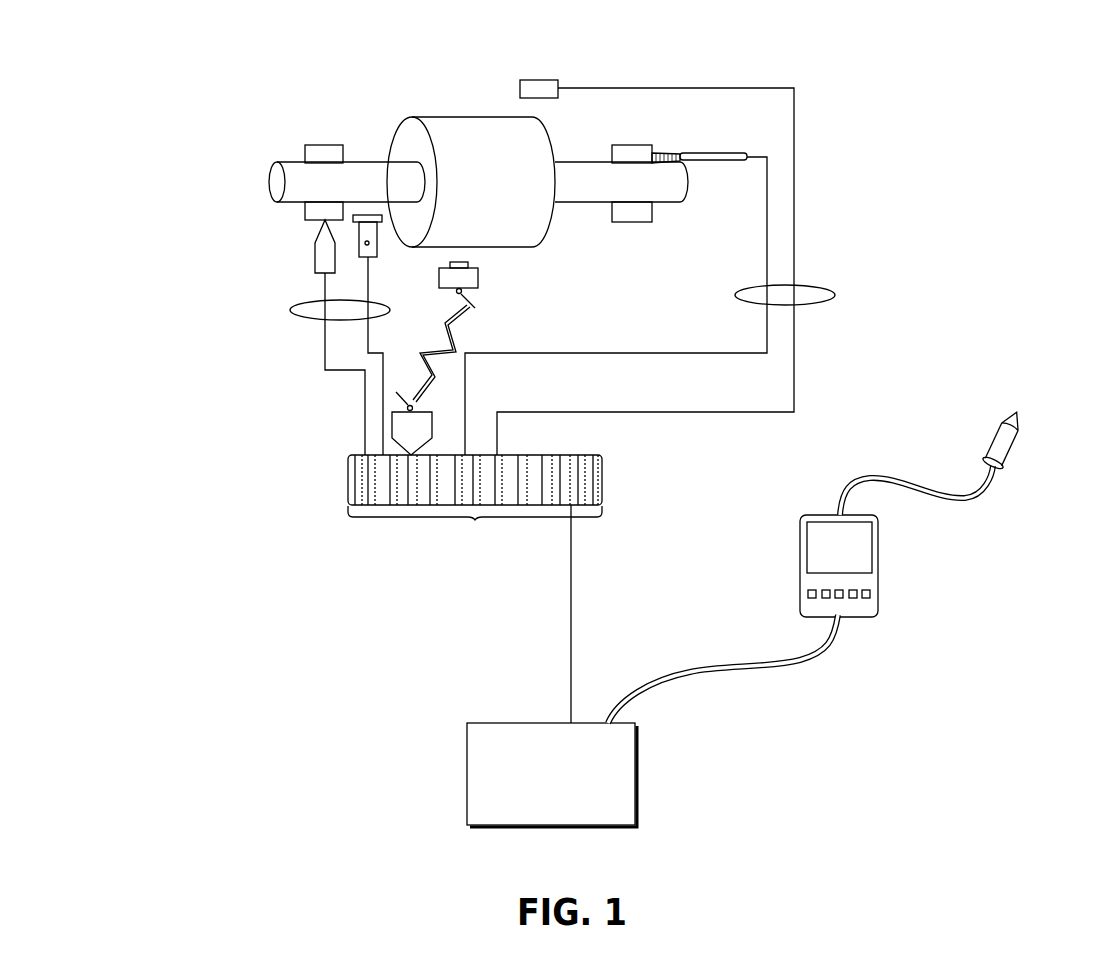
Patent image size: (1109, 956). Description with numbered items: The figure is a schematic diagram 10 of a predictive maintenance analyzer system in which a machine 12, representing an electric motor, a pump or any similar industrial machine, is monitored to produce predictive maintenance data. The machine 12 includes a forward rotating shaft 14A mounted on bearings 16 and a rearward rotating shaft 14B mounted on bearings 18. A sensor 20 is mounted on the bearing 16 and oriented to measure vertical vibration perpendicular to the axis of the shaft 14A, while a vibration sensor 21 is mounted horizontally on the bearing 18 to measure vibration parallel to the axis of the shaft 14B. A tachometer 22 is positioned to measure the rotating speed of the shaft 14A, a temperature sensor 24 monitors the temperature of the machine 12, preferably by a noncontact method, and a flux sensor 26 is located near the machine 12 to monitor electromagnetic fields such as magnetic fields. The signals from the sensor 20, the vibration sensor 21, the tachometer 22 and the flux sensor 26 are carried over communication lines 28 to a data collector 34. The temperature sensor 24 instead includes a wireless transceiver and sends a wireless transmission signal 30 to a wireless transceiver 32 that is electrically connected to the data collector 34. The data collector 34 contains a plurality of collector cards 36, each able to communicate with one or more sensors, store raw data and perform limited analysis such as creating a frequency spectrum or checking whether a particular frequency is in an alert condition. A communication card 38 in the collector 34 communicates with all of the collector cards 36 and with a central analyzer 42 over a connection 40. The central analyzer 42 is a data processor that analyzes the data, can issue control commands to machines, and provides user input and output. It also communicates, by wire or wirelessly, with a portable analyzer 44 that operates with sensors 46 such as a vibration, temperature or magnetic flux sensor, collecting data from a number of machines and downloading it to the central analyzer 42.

The schematic diagram 10 is at (204, 87).
The machine 12 is at (428, 119).
The forward rotating shaft 14A is at (277, 183).
The rearward rotating shaft 14B is at (668, 189).
The bearings 16 is at (324, 147).
The bearings 18 is at (637, 146).
The sensor 20 is at (319, 258).
The vibration sensor 21 is at (705, 152).
The tachometer 22 is at (380, 240).
The temperature sensor 24 is at (478, 278).
The flux sensor 26 is at (545, 88).
The communication lines 28 is at (292, 310).
The wireless transmission signal 30 is at (471, 316).
The wireless transceiver 32 is at (412, 423).
The data collector 34 is at (330, 483).
The collector cards 36 is at (475, 520).
The communication card 38 is at (602, 475).
The cable 40 is at (572, 588).
The central analyzer 42 is at (490, 723).
The portable analyzer 44 is at (877, 573).
The sensors 46 is at (1013, 437).